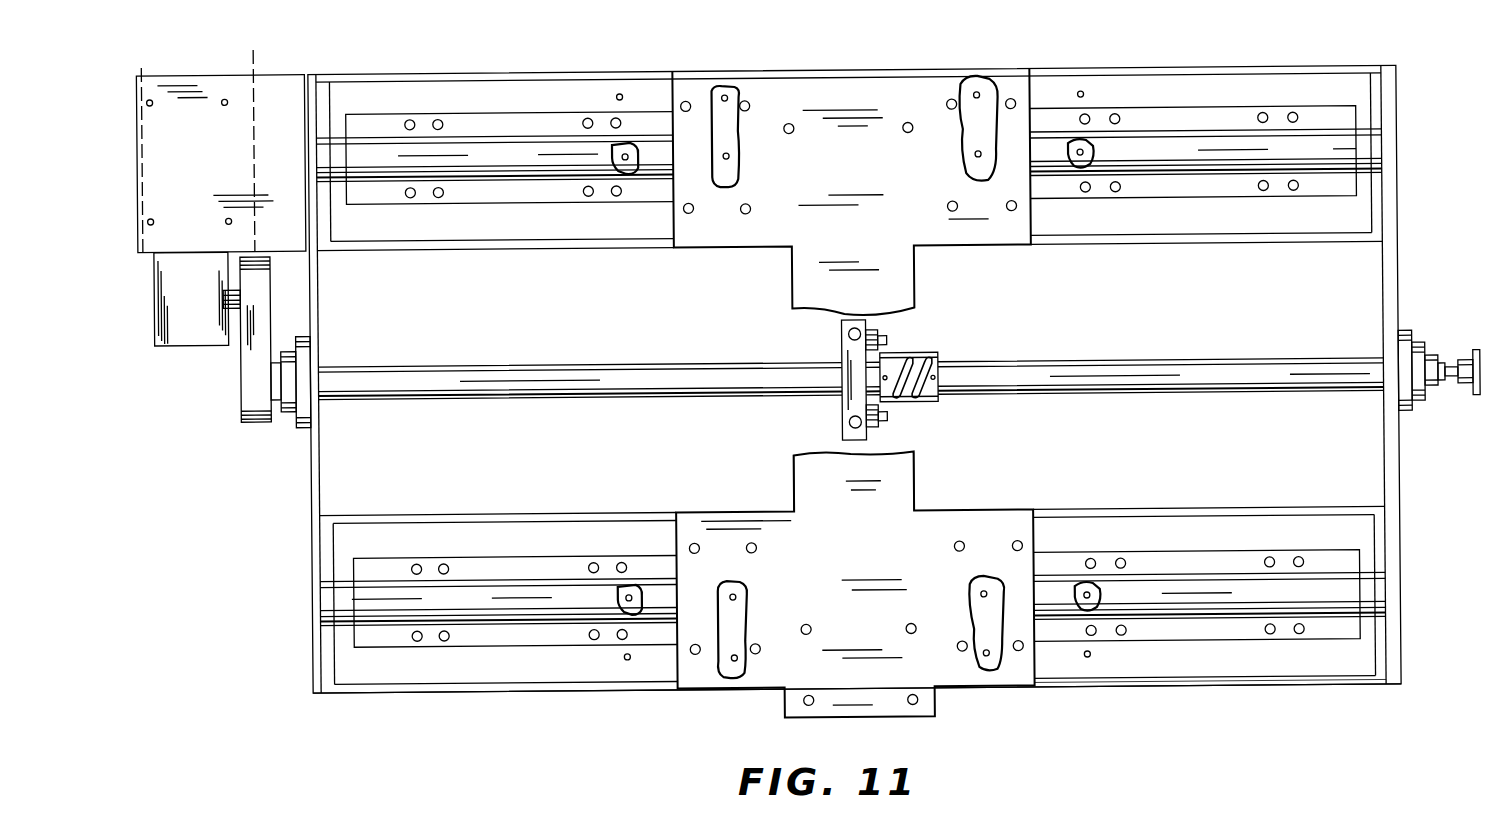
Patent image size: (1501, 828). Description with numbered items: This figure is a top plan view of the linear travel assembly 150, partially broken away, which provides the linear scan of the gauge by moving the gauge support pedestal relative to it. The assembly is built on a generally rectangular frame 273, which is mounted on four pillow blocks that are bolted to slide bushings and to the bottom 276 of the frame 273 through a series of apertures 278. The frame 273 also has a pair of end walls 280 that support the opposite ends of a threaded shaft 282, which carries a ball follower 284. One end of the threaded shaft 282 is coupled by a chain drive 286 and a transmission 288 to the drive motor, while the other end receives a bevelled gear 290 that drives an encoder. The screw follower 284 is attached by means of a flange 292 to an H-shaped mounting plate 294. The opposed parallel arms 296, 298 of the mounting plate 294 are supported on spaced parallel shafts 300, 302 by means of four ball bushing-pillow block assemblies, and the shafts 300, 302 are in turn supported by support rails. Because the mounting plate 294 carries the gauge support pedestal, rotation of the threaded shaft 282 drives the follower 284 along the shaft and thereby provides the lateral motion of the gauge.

The linear travel assembly 150 is at (1056, 321).
The frame 273 is at (297, 601).
The bottom of frame 276 is at (1132, 671).
The apertures 278 is at (982, 157).
The end walls 280 is at (1399, 467).
The threaded shaft 282 is at (1137, 365).
The ball follower 284 is at (836, 340).
The chain drive 286 is at (240, 352).
The transmission 288 is at (205, 276).
The bevelled gear 290 is at (1463, 365).
The flange 292 is at (842, 402).
The H-shaped mounting plate 294 is at (790, 486).
The arm of mounting plate 296 is at (872, 573).
The arm of mounting plate 298 is at (868, 162).
The shaft 300 is at (492, 622).
The shaft 302 is at (493, 137).